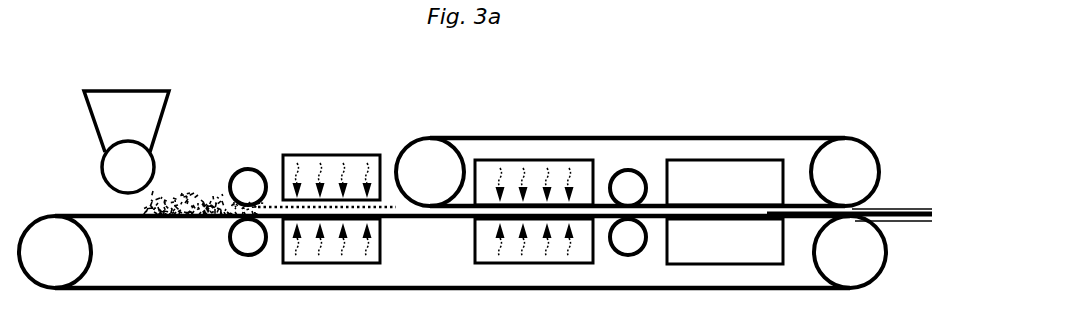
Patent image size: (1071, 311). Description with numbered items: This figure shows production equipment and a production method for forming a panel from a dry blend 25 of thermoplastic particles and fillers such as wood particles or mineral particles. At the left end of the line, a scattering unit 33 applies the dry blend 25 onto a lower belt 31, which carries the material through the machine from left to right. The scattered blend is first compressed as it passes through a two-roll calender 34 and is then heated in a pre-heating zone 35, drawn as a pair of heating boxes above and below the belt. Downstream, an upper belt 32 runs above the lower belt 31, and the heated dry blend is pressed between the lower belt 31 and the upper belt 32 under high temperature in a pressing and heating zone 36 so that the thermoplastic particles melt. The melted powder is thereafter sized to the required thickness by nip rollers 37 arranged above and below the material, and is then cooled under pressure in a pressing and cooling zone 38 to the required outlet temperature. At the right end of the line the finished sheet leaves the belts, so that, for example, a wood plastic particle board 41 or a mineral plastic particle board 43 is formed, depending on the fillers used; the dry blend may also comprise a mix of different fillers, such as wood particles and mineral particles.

The dry blend 25 is at (186, 193).
The lower belt 31 is at (84, 213).
The upper belt 32 is at (468, 135).
The scattering unit 33 is at (158, 108).
The 2-roll calender 34 is at (247, 172).
The pre-heating zone 35 is at (337, 160).
The pressing and heating zone 36 is at (538, 168).
The nip rollers 37 is at (628, 183).
The pressing and cooling zone 38 is at (697, 163).
The wood plastic particle board 41 is at (901, 190).
The mineral plastic particle board 43 is at (921, 190).